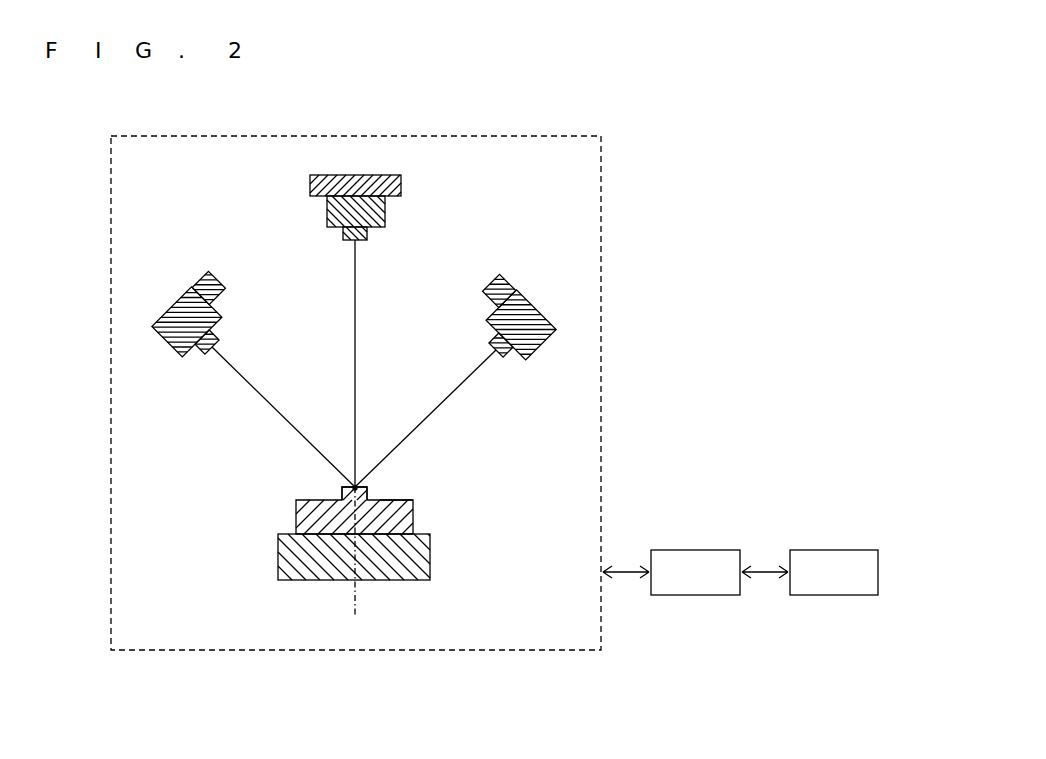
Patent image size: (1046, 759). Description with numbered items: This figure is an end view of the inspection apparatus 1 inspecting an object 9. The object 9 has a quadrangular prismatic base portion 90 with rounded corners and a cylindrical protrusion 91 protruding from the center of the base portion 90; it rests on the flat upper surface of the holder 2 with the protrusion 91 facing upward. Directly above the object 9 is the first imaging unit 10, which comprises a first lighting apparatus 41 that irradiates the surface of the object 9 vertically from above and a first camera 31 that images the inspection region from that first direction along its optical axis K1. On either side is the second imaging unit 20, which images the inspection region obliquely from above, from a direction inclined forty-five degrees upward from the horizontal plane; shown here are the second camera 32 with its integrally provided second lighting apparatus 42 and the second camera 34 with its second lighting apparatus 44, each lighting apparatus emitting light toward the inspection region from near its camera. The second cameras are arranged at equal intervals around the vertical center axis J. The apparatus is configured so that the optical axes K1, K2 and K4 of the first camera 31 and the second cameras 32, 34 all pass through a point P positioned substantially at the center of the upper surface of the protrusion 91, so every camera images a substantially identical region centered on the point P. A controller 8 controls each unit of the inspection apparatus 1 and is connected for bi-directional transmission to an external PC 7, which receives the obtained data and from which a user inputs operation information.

The inspection apparatus 1 is at (753, 170).
The holder 2 is at (279, 560).
The PC 7 is at (835, 597).
The controller 8 is at (695, 597).
The object 9 is at (352, 497).
The first imaging unit 10 is at (414, 192).
The second imaging unit 20 is at (356, 325).
The first camera 31 is at (390, 211).
The second camera 32 is at (521, 325).
The second camera 34 is at (187, 322).
The first lighting apparatus 41 is at (377, 170).
The second lighting apparatus 42 is at (499, 290).
The second lighting apparatus 44 is at (208, 287).
The base portion 90 is at (414, 506).
The protrusion 91 is at (368, 492).
The optical axis K1 is at (355, 305).
The optical axis K2 is at (474, 378).
The optical axis K4 is at (240, 378).
The center axis J is at (358, 605).
The point P is at (352, 486).